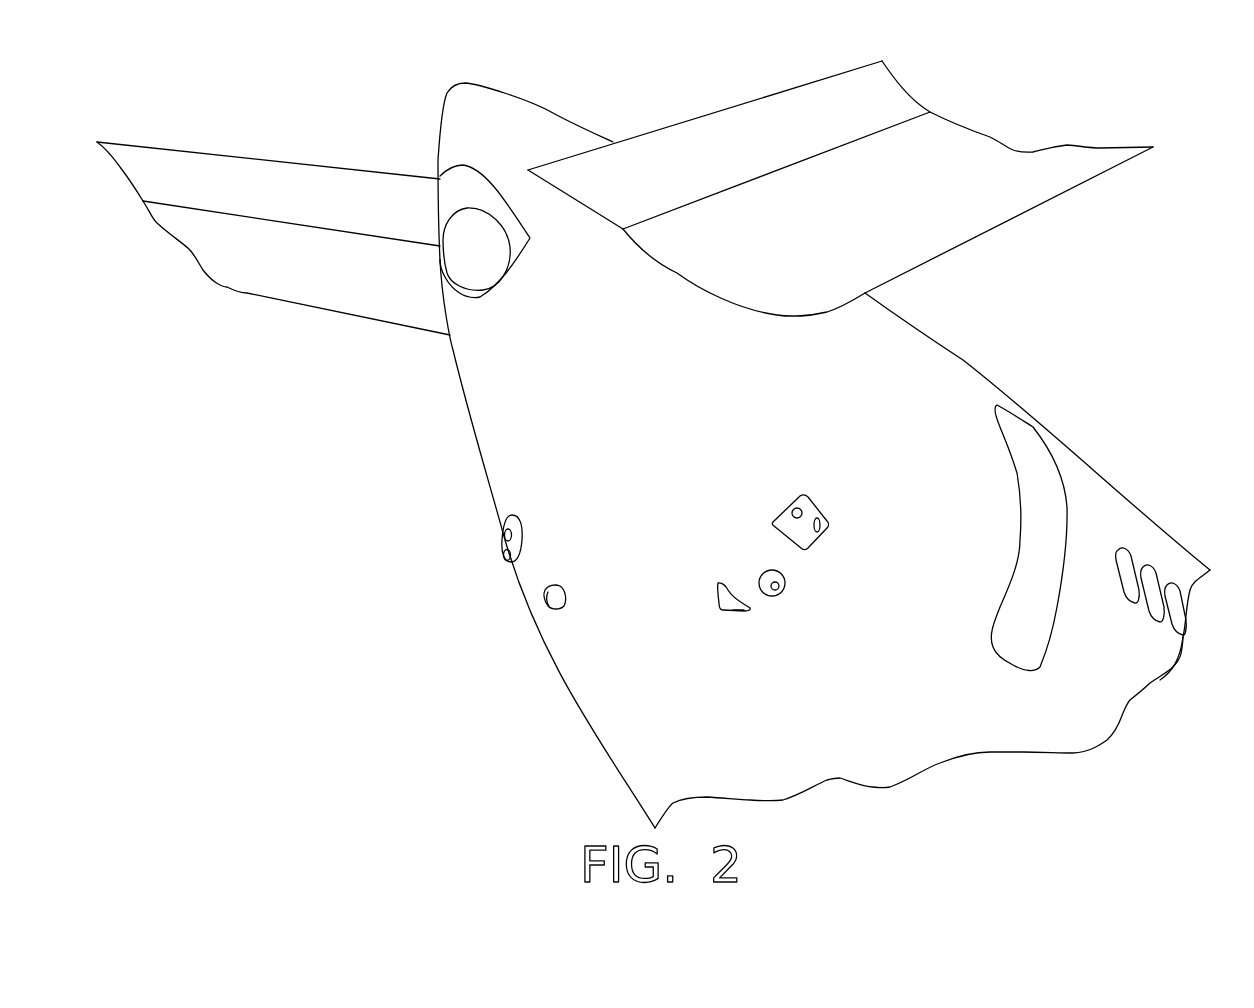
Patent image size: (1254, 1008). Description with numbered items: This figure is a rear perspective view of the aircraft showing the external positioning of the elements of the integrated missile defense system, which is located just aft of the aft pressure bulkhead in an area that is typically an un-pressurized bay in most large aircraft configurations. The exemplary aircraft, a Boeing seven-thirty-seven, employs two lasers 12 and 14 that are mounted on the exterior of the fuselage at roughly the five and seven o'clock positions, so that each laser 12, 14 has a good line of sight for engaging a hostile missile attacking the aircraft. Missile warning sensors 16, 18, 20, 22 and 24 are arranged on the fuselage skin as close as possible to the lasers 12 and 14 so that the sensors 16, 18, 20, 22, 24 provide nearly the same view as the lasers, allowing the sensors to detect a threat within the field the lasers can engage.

The laser 12 is at (780, 587).
The laser 14 is at (543, 600).
The missile warning sensor 16 is at (795, 513).
The missile warning sensor 18 is at (823, 523).
The missile warning sensor 20 is at (502, 538).
The missile warning sensor 22 is at (507, 558).
The missile warning sensor 24 is at (738, 612).